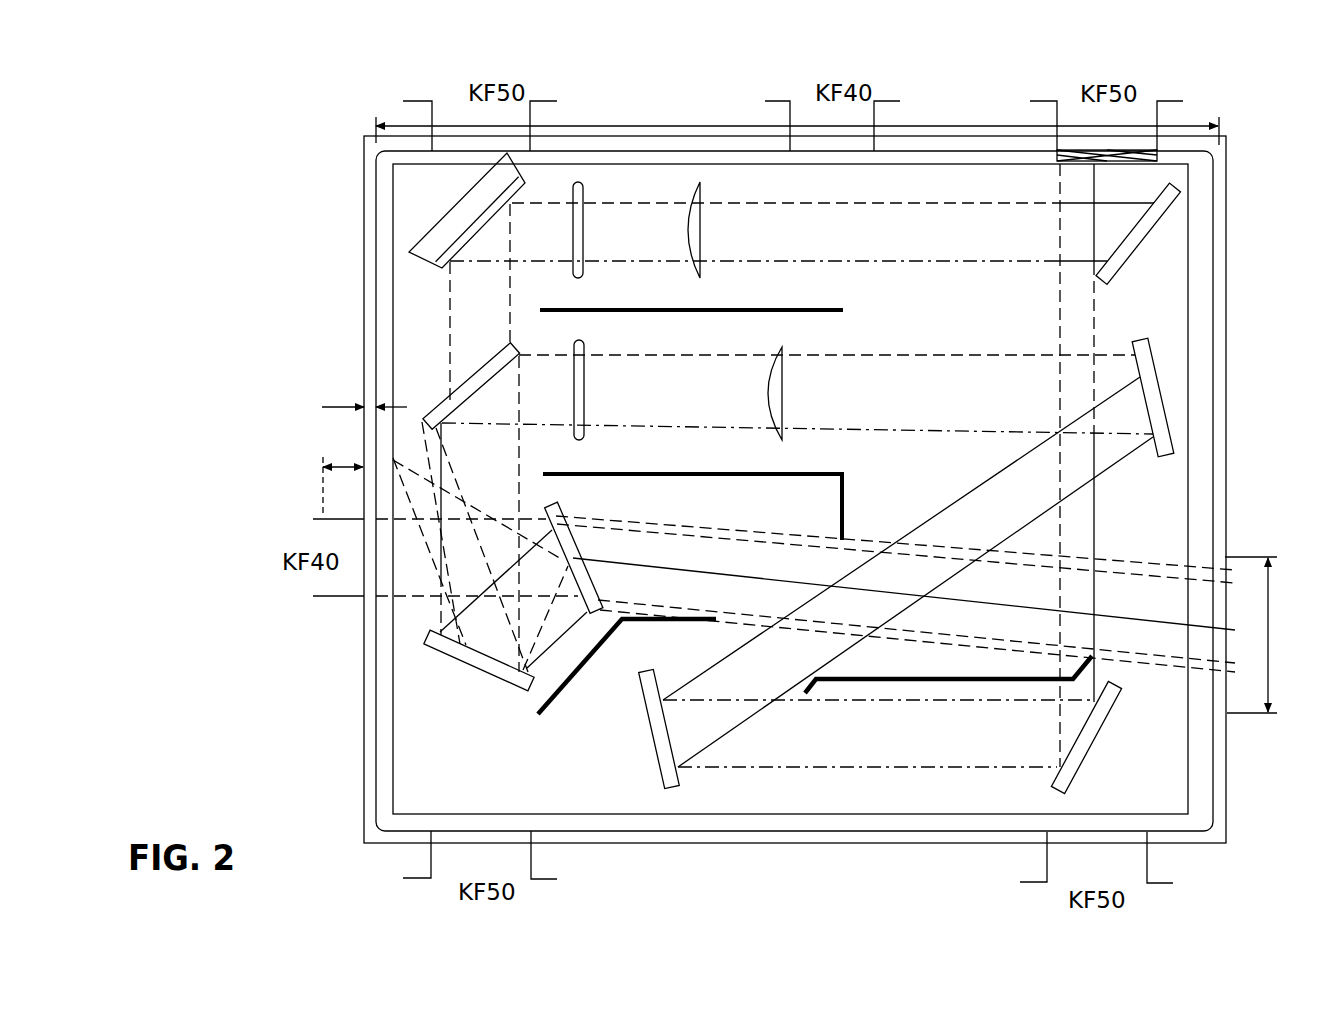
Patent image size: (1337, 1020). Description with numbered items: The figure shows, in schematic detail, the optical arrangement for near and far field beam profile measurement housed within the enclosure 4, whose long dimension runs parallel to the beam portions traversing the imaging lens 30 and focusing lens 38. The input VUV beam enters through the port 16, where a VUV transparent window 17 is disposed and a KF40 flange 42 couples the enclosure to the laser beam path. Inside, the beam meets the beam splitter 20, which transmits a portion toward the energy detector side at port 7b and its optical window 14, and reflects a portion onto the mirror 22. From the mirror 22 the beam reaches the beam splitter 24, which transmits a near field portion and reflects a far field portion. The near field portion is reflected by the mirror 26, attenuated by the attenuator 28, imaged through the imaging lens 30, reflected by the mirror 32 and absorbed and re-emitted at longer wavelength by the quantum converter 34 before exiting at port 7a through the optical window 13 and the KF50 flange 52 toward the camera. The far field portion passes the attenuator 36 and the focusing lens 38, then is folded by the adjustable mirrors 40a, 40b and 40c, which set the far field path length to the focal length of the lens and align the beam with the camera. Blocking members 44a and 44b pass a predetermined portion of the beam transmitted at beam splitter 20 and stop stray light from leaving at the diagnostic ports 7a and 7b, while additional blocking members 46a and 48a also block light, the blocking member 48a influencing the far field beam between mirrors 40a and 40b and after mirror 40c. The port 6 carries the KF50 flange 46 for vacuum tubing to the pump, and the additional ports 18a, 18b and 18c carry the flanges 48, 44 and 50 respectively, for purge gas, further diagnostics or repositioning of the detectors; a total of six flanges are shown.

The enclosure 4 is at (650, 93).
The port 6 is at (448, 870).
The optical port 7a is at (1135, 110).
The optical port 7b is at (1236, 684).
The optical window 13 is at (1065, 133).
The optical window 14 is at (1231, 567).
The port 16 is at (345, 598).
The VUV transparent window 17 is at (363, 537).
The port 18a is at (452, 107).
The port 18b is at (806, 107).
The port 18c is at (1135, 884).
The beam splitter 20 is at (556, 510).
The mirror 22 is at (480, 672).
The beam splitter 24 is at (438, 402).
The mirror 26 is at (456, 205).
The attenuator 28 is at (584, 192).
The imaging lens 30 is at (702, 193).
The mirror 32 is at (1148, 237).
The quantum converter 34 is at (1160, 158).
The attenuator 36 is at (585, 346).
The focusing lens 38 is at (784, 350).
The mirror 40a is at (1163, 460).
The mirror 40b is at (652, 738).
The mirror 40c is at (1085, 757).
The flange 42 is at (320, 507).
The flange 44 is at (874, 128).
The blocking member 44a is at (844, 505).
The blocking member 44b is at (645, 621).
The flange 46 is at (531, 867).
The blocking member 46a is at (800, 308).
The flange 48 is at (530, 130).
The blocking member 48a is at (887, 677).
The flange 50 is at (1147, 862).
The flange 52 is at (1164, 127).